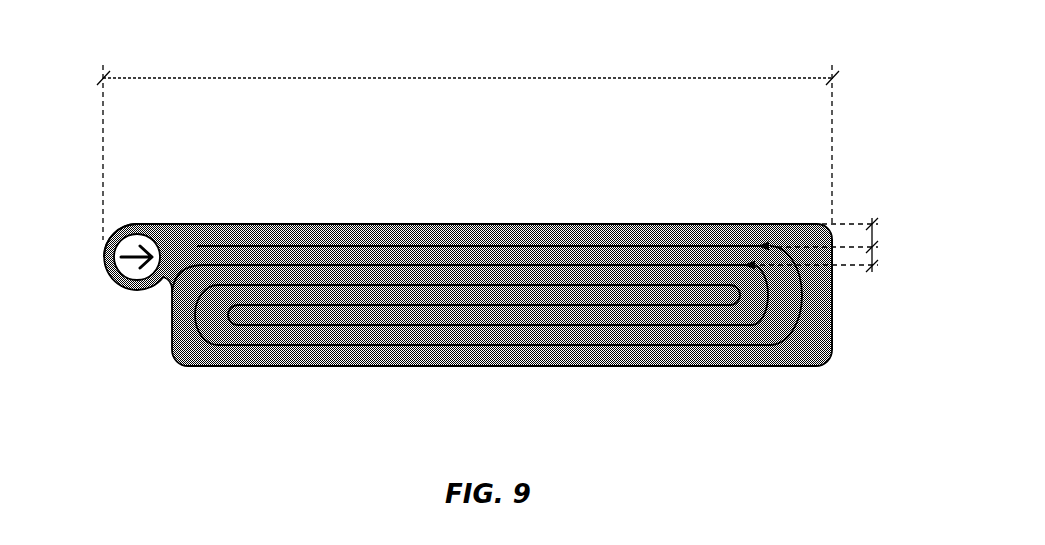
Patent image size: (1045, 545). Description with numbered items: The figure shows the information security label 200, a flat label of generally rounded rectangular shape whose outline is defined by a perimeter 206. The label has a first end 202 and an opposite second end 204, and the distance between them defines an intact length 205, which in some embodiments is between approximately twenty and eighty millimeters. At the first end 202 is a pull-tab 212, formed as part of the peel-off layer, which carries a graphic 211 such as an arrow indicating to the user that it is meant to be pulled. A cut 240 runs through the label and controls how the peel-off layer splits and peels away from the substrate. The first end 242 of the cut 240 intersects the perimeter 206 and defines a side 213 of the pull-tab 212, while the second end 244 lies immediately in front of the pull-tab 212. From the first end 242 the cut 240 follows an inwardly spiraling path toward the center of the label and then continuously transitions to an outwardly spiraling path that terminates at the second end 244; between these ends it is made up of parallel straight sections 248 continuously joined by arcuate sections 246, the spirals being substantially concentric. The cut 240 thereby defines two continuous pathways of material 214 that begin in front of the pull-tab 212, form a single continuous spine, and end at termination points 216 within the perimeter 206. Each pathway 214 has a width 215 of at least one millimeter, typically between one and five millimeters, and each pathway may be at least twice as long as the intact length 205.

The information security label 200 is at (570, 232).
The first end 202 is at (104, 262).
The second end 204 is at (835, 288).
The intact length 205 is at (452, 74).
The perimeter 206 is at (727, 222).
The graphic 211 is at (133, 272).
The pull-tab 212 is at (110, 273).
The side of pull-tab 213 is at (178, 268).
The pathways of material 214 is at (323, 232).
The width 215 is at (882, 232).
The termination points 216 is at (240, 325).
The cut 240 is at (680, 243).
The first end of cut 242 is at (153, 223).
The second end of cut 244 is at (205, 240).
The arcuate sections 246 is at (172, 345).
The straight sections 248 is at (410, 243).